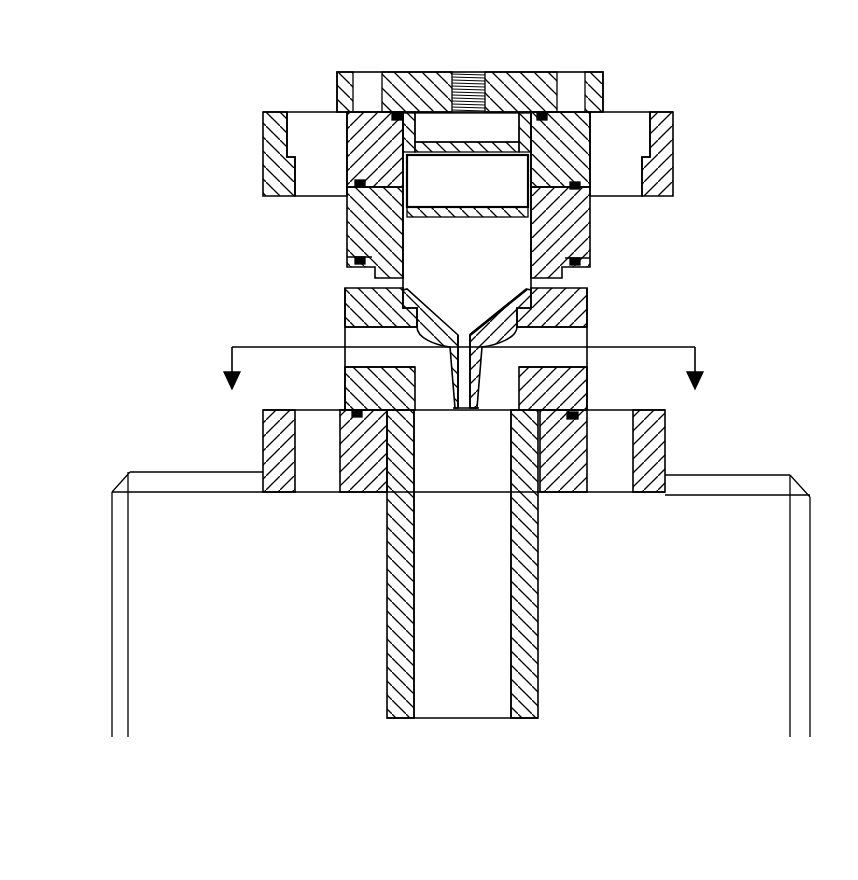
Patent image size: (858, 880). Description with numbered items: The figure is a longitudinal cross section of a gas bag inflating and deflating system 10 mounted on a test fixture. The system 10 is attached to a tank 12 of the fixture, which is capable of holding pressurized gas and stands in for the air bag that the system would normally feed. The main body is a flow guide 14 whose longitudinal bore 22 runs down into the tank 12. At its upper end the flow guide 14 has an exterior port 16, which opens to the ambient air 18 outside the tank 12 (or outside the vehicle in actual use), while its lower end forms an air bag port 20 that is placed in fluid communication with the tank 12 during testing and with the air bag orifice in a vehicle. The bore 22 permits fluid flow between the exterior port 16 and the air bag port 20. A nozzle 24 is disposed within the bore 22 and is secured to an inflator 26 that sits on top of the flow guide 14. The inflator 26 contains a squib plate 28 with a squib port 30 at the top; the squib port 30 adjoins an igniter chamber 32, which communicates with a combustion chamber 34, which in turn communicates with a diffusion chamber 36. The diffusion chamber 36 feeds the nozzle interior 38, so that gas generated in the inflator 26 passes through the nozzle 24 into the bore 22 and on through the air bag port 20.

The system 10 is at (189, 88).
The tank 12 is at (707, 638).
The flow guide 14 is at (580, 298).
The exterior port 16 is at (583, 340).
The ambient air 18 is at (823, 270).
The air bag port 20 is at (470, 698).
The longitudinal bore 22 is at (481, 624).
The nozzle 24 is at (479, 350).
The inflator 26 is at (630, 90).
The squib plate 28 is at (523, 95).
The squib port 30 is at (475, 80).
The igniter chamber 32 is at (437, 127).
The combustion chamber 34 is at (487, 179).
The diffusion chamber 36 is at (473, 240).
The nozzle interior 38 is at (475, 406).